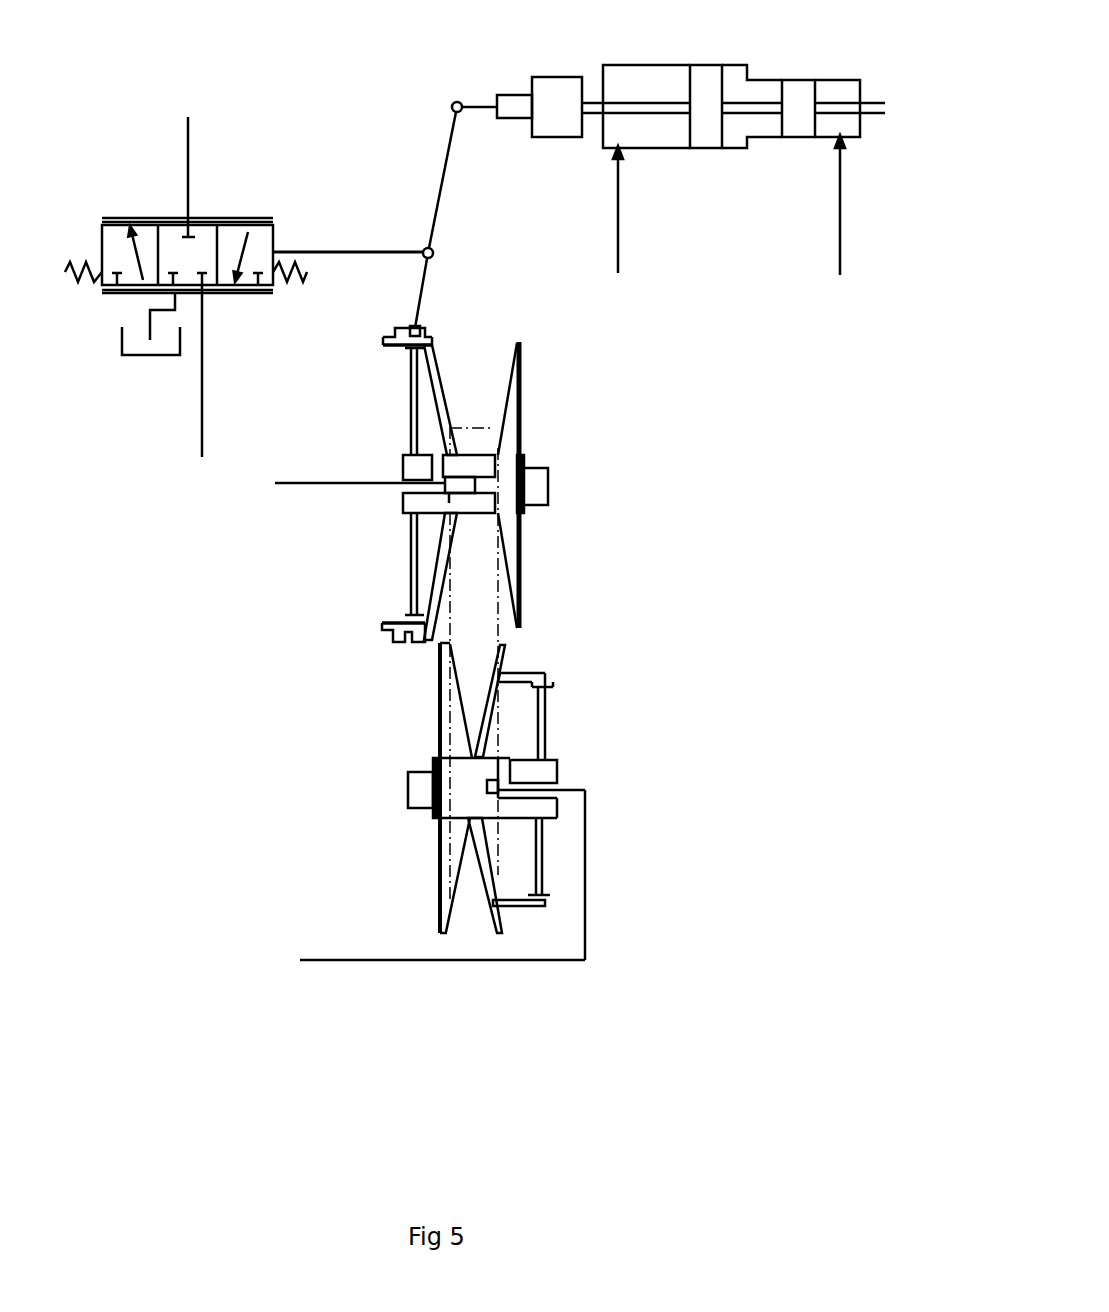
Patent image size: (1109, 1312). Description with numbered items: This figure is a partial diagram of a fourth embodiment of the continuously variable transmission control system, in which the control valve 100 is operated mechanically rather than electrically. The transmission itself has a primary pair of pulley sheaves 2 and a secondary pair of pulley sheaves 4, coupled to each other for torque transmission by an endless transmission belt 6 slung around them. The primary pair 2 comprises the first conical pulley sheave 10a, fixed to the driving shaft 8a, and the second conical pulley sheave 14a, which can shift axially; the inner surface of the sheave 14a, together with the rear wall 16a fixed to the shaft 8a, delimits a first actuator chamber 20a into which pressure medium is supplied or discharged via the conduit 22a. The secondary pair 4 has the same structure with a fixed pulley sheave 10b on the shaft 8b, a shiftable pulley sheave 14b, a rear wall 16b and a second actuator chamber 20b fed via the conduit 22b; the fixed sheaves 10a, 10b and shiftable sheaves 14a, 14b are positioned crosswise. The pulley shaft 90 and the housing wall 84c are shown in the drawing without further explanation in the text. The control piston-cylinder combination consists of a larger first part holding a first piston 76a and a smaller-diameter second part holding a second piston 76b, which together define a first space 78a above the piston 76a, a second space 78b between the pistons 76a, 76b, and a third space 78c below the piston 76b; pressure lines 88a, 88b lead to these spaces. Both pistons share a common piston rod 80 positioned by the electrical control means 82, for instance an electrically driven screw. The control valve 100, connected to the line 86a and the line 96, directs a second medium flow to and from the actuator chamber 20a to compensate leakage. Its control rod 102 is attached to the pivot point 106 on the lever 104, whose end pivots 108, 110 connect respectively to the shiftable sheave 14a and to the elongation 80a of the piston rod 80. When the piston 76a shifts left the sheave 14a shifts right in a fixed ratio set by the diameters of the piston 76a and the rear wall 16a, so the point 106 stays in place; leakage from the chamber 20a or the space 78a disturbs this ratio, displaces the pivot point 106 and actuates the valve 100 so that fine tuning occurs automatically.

The primary pair of pulley sheaves 2 is at (585, 490).
The secondary pair of pulley sheaves 4 is at (598, 823).
The endless transmission belt 6 is at (487, 636).
The driving shaft 8a is at (545, 483).
The shaft of secondary pulley 8b is at (418, 793).
The first conical pulley sheave 10a is at (515, 428).
The fixed pulley sheave of secondary pair 10b is at (455, 748).
The second conical pulley sheave 14a is at (485, 348).
The shiftable pulley sheave of secondary pair 14b is at (490, 935).
The rear wall 16a is at (410, 448).
The rear wall of secondary pair 16b is at (550, 715).
The first actuator chamber 20a is at (430, 408).
The second actuator chamber 20b is at (523, 887).
The conduit 22a is at (438, 485).
The conduit of secondary pair 22b is at (560, 782).
The first piston 76a is at (702, 78).
The second piston 76b is at (800, 92).
The first space 78a is at (640, 135).
The second space 78b is at (733, 135).
The third space 78c is at (848, 125).
The piston rod 80 is at (590, 100).
The elongation of the piston rod 80a is at (520, 95).
The electrical control means 82 is at (555, 77).
The housing wall 84c is at (410, 958).
The line 86a is at (197, 405).
The first pressure supply line 88a is at (618, 258).
The second pressure supply line 88b is at (840, 252).
The primary shaft 90 is at (292, 480).
The line 96 is at (187, 148).
The control valve 100 is at (115, 217).
The control rod 102 is at (365, 250).
The lever 104 is at (440, 172).
The pivot point 106 is at (434, 250).
The end pivot 108 is at (420, 327).
The end pivot 110 is at (452, 104).